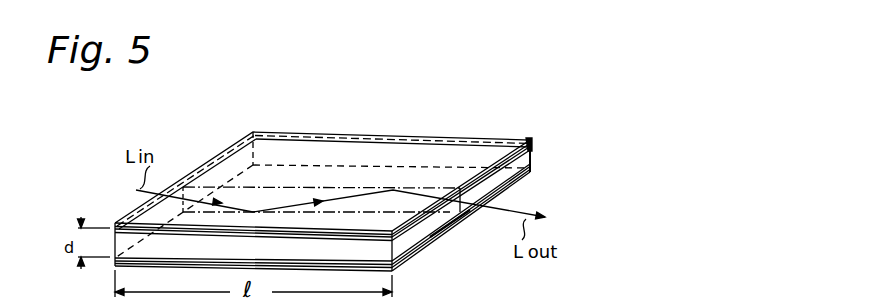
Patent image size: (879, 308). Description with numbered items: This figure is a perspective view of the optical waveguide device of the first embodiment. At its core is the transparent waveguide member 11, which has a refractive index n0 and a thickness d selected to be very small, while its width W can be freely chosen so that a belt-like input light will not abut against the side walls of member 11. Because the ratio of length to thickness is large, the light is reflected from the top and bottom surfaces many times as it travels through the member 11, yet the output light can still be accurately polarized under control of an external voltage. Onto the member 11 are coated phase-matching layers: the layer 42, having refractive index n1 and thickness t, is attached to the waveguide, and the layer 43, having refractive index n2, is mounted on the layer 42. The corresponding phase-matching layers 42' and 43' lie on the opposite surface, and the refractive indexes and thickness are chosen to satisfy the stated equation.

The transparent waveguide member 11 is at (540, 157).
The layer 42 is at (351, 178).
The phase-matching layer 42' is at (354, 217).
The layer 43 is at (542, 116).
The phase-matching layer 43' is at (455, 245).